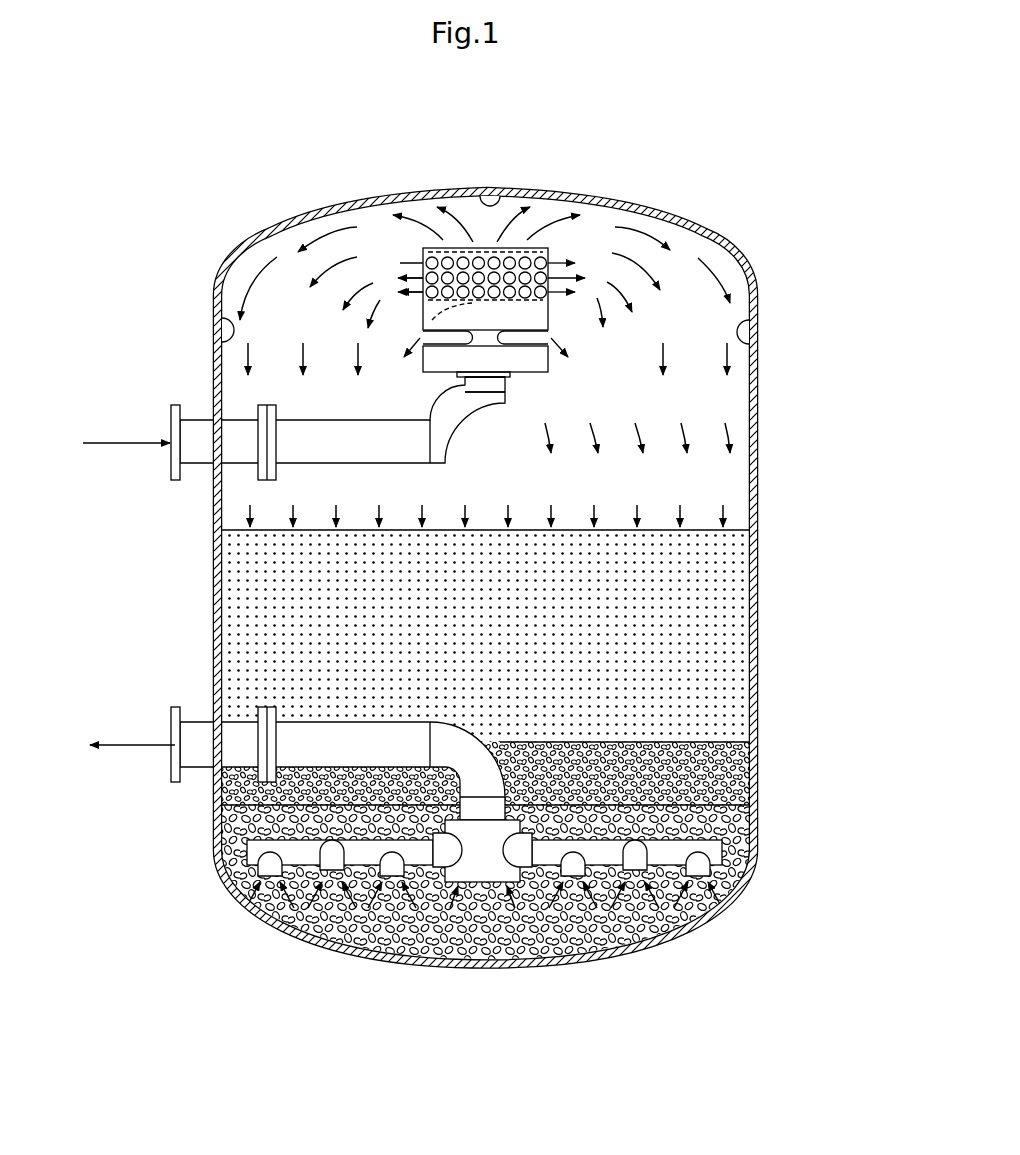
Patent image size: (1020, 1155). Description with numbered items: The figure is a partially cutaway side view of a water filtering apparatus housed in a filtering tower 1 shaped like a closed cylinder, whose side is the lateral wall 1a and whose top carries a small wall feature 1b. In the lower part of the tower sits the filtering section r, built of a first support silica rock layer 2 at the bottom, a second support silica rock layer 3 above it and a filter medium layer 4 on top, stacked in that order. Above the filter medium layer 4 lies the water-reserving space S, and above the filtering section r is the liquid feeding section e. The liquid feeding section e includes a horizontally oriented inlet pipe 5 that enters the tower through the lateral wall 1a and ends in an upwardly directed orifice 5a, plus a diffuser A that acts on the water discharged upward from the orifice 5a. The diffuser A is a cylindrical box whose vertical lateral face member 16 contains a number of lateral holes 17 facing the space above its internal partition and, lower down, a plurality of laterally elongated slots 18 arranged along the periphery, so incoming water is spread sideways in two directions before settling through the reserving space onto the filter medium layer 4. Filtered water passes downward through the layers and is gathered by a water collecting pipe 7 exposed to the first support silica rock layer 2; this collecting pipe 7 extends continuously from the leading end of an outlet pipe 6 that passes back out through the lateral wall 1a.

The filtering tower 1 is at (663, 212).
The lateral wall 1a is at (213, 343).
The top wall protrusion 1b is at (481, 190).
The first support silica rock layer 2 is at (472, 937).
The second support silica rock layer 3 is at (240, 783).
The filter medium layer 4 is at (250, 628).
The inlet pipe 5 is at (360, 430).
The orifice 5a is at (483, 383).
The outlet pipe 6 is at (361, 740).
The water collecting pipe 7 is at (330, 872).
The lateral face member 16 is at (527, 360).
The lateral holes 17 is at (423, 320).
The laterally elongated slots 18 is at (457, 337).
The diffuser A is at (499, 330).
The liquid feeding section e is at (330, 335).
The water-reserving space S is at (549, 480).
The filtering section r is at (727, 637).